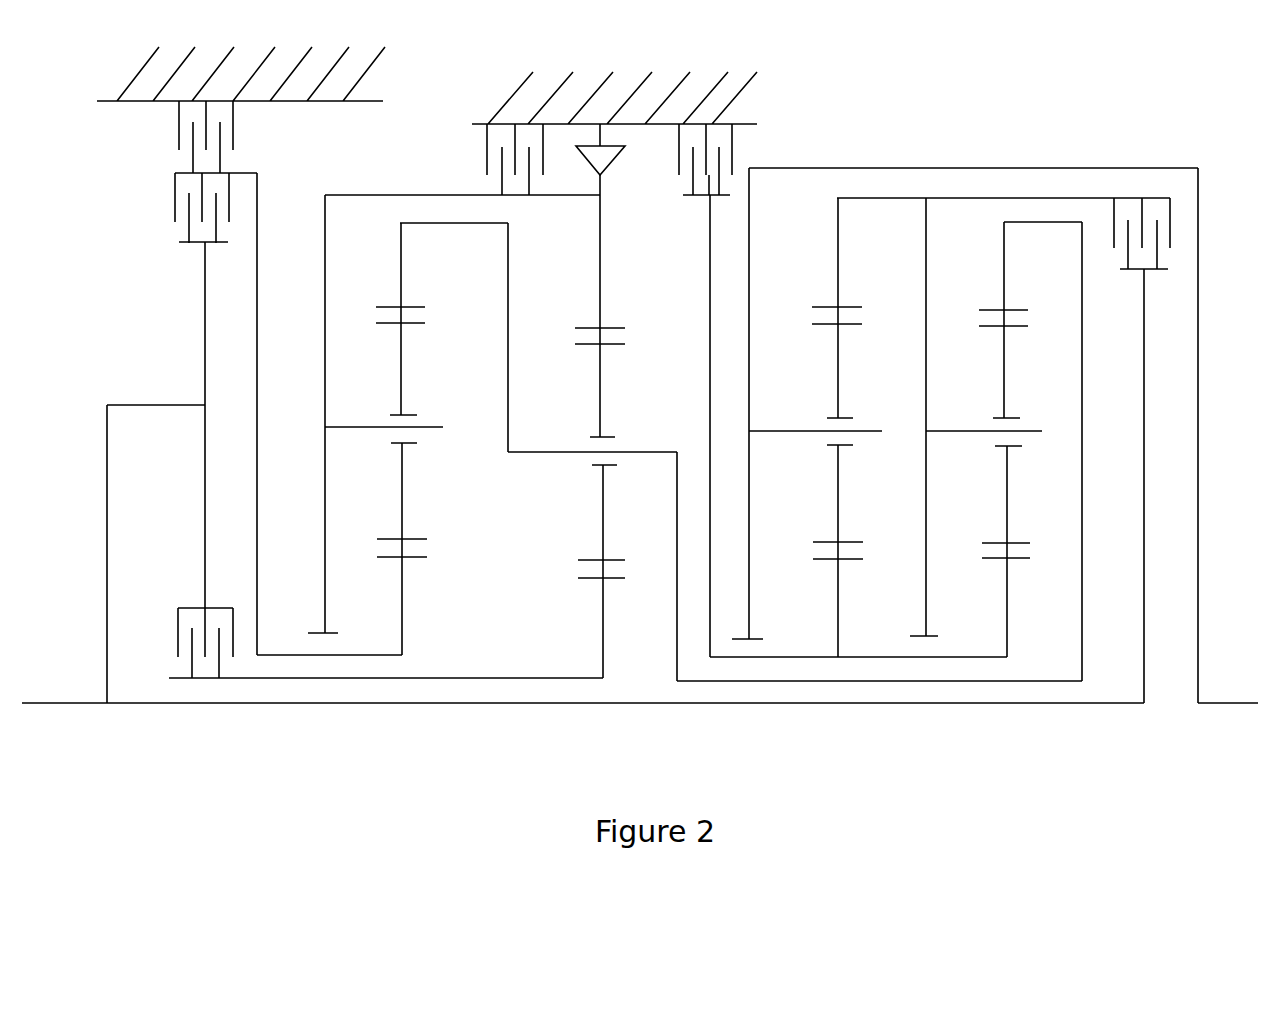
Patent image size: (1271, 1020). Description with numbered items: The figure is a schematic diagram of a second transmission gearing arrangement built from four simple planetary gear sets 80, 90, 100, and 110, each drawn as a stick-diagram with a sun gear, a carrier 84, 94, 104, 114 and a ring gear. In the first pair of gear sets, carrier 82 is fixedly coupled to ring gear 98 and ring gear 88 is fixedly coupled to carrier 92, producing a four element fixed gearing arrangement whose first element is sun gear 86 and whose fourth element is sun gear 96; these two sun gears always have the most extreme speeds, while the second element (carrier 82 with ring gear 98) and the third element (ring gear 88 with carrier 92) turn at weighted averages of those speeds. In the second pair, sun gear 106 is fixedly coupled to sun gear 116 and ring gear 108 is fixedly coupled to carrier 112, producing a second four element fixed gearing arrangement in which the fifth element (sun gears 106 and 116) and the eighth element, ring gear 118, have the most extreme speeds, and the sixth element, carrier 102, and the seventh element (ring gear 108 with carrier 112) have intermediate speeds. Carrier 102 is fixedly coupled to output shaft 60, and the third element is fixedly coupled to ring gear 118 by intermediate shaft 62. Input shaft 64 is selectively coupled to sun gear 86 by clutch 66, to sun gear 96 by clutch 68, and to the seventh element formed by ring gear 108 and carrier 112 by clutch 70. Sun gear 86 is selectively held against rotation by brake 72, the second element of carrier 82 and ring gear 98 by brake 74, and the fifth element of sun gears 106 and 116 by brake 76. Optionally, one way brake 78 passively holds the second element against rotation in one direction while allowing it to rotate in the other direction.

The output shaft 60 is at (1253, 702).
The intermediate shaft 62 is at (692, 680).
The input shaft 64 is at (233, 703).
The clutch 66 is at (176, 197).
The clutch 68 is at (177, 640).
The clutch 70 is at (1128, 271).
The brake 72 is at (233, 128).
The brake 74 is at (487, 163).
The brake 76 is at (733, 150).
The one way brake 78 is at (615, 157).
The planetary gear set 80 is at (350, 592).
The carrier 82 is at (327, 447).
The planet carrier 84 is at (403, 377).
The sun gear 86 is at (400, 593).
The ring gear 88 is at (400, 272).
The planetary gear set 90 is at (600, 598).
The carrier 92 is at (527, 453).
The planet carrier 94 is at (603, 403).
The sun gear 96 is at (600, 615).
The ring gear 98 is at (600, 293).
The planetary gear set 100 is at (858, 589).
The carrier 102 is at (782, 431).
The planet carrier 104 is at (840, 377).
The sun gear 106 is at (838, 595).
The ring gear 108 is at (838, 273).
The planetary gear set 110 is at (1003, 589).
The carrier 112 is at (926, 343).
The planet carrier 114 is at (1005, 383).
The sun gear 116 is at (1007, 595).
The ring gear 118 is at (1004, 274).